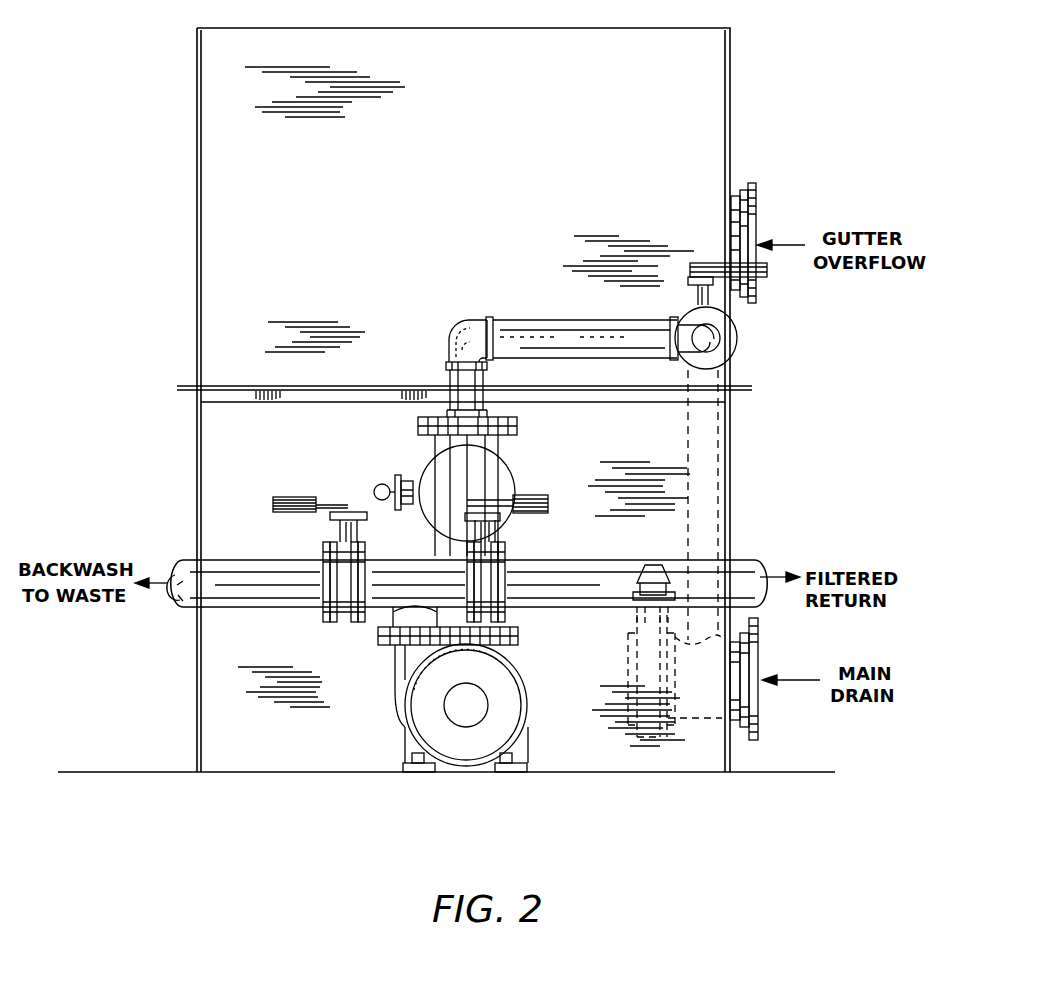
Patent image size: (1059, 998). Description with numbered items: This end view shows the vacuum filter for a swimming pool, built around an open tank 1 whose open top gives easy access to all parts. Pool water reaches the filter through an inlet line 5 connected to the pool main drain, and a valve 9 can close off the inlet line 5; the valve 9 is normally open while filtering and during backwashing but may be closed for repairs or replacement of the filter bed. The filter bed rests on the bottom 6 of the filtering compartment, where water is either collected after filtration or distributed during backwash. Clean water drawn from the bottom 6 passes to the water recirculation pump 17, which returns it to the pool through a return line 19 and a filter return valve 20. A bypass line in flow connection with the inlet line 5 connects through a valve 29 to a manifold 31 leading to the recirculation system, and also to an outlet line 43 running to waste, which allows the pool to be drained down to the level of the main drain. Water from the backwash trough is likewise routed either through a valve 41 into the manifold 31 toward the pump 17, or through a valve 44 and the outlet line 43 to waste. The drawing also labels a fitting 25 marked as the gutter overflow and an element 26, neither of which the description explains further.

The open tank 1 is at (197, 698).
The inlet line 5 is at (752, 700).
The bottom 6 is at (300, 775).
The valve 9 is at (660, 735).
The water recirculation pump 17 is at (530, 697).
The return line 19 is at (635, 578).
The filter return valve 20 is at (497, 505).
The gutter overflow connection 25 is at (752, 214).
The overflow pipe 26 is at (695, 440).
The valve 29 is at (716, 268).
The manifold 31 is at (572, 332).
The valve 41 is at (410, 488).
The outlet line 43 is at (268, 575).
The valve 44 is at (350, 510).